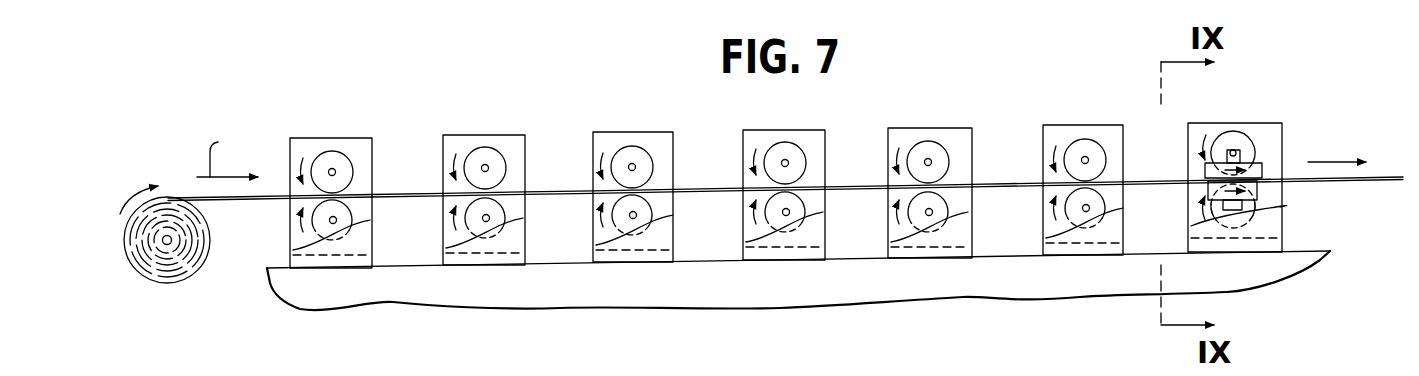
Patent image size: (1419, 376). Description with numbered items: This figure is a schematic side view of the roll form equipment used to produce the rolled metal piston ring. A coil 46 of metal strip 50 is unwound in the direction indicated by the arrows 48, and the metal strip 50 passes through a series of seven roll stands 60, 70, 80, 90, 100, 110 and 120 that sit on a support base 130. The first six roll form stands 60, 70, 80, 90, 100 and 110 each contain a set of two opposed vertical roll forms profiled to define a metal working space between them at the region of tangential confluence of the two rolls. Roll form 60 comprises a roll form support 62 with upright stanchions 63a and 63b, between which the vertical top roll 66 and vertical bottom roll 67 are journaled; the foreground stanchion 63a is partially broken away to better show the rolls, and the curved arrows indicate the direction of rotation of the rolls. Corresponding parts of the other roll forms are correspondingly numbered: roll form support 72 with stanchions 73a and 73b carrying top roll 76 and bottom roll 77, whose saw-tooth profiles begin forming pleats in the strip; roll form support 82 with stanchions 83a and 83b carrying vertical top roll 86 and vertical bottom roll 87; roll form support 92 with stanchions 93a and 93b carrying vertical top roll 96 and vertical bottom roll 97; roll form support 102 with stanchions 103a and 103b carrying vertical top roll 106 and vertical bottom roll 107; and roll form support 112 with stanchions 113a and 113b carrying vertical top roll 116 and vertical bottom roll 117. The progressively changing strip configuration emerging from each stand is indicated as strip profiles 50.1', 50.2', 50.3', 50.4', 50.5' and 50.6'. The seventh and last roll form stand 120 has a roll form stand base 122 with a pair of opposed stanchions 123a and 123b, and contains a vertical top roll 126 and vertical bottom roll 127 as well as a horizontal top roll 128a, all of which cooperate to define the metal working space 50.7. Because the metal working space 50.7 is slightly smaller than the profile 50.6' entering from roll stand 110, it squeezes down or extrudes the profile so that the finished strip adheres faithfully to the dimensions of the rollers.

The coil 46 is at (158, 257).
The arrows 48 is at (125, 203).
The metal strip 50 is at (260, 198).
The roll form stand 60 is at (364, 202).
The roll form support 62 is at (373, 247).
The stanchion 63a is at (350, 248).
The stanchion 63b is at (302, 148).
The vertical top roll 66 is at (347, 167).
The vertical bottom roll 67 is at (342, 208).
The strip profile 50.1' is at (409, 211).
The roll form stand 70 is at (520, 196).
The roll form support 72 is at (526, 245).
The stanchion 73a is at (503, 246).
The stanchion 73b is at (455, 145).
The top roll 76 is at (500, 163).
The bottom roll 77 is at (495, 206).
The strip profile 50.2' is at (561, 209).
The roll form stand 80 is at (662, 193).
The roll form support 82 is at (674, 242).
The stanchion 83a is at (650, 243).
The stanchion 83b is at (605, 142).
The vertical top roll 86 is at (647, 162).
The vertical bottom roll 87 is at (642, 203).
The strip profile 50.3' is at (709, 206).
The roll form stand 90 is at (819, 191).
The roll form support 92 is at (826, 239).
The stanchion 93a is at (803, 240).
The stanchion 93b is at (755, 140).
The vertical top roll 96 is at (800, 158).
The vertical bottom roll 97 is at (795, 200).
The strip profile 50.4' is at (860, 204).
The roll form stand 100 is at (960, 190).
The roll form support 102 is at (973, 239).
The stanchion 103a is at (946, 240).
The stanchion 103b is at (900, 138).
The vertical top roll 106 is at (943, 157).
The vertical bottom roll 107 is at (938, 200).
The strip profile 50.5' is at (1008, 202).
The roll form stand 110 is at (1117, 186).
The roll form support 112 is at (1124, 235).
The stanchion 113a is at (1100, 236).
The stanchion 113b is at (1055, 135).
The vertical top roll 116 is at (1100, 155).
The vertical bottom roll 117 is at (1095, 196).
The strip profile 50.6' is at (1158, 199).
The roll form stand 120 is at (1303, 184).
The roll form stand base 122 is at (1284, 238).
The stanchion 123a is at (1232, 236).
The stanchion 123b is at (1197, 130).
The vertical top roll 126 is at (1249, 143).
The vertical bottom roll 127 is at (1258, 208).
The horizontal top roll 128a is at (1258, 191).
The metal working space 50.7 is at (1368, 187).
The support base 130 is at (802, 288).